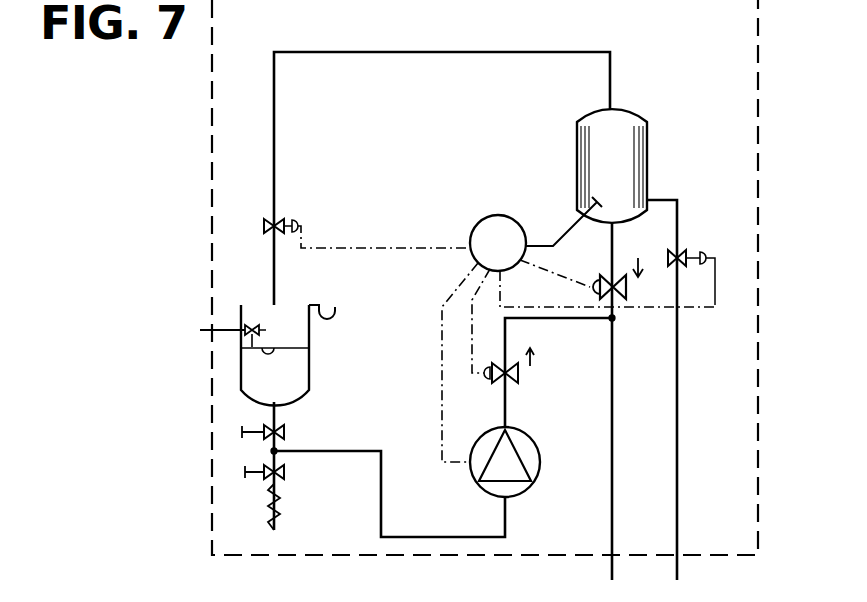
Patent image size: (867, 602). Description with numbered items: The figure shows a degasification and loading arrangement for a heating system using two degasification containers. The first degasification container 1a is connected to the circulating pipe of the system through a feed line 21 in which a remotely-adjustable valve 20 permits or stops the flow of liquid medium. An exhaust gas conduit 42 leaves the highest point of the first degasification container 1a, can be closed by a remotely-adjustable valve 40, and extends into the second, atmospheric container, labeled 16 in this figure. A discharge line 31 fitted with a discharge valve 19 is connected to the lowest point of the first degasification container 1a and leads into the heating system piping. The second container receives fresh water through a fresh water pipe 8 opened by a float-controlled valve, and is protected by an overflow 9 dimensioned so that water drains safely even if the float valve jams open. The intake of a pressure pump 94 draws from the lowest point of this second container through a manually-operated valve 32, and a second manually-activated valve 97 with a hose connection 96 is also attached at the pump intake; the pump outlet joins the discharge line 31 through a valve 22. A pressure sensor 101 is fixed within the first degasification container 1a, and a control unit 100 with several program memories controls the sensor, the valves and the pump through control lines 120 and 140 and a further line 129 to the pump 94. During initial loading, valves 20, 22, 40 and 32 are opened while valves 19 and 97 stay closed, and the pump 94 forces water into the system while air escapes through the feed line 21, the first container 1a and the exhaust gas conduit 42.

The first degasification container 1a is at (698, 120).
The fresh water pipe 8 is at (202, 332).
The overflow 9 is at (336, 314).
The water tank 16 is at (311, 392).
The discharge valve 19 is at (628, 297).
The remotely-adjustable valve 20 is at (684, 255).
The feed line 21 is at (679, 402).
The valve 22 is at (520, 381).
The discharge line 31 is at (614, 402).
The manually-operated valve 32 is at (286, 431).
The remotely-adjustable valve 40 is at (280, 220).
The exhaust gas conduit 42 is at (446, 50).
The pressure pump 94 is at (527, 462).
The hose connection 96 is at (278, 531).
The manually-activated valve 97 is at (286, 473).
The control unit 100 is at (530, 251).
The pressure sensor 101 is at (563, 236).
The control line 120 is at (715, 307).
The signal line 129 is at (442, 412).
The control line 140 is at (386, 243).